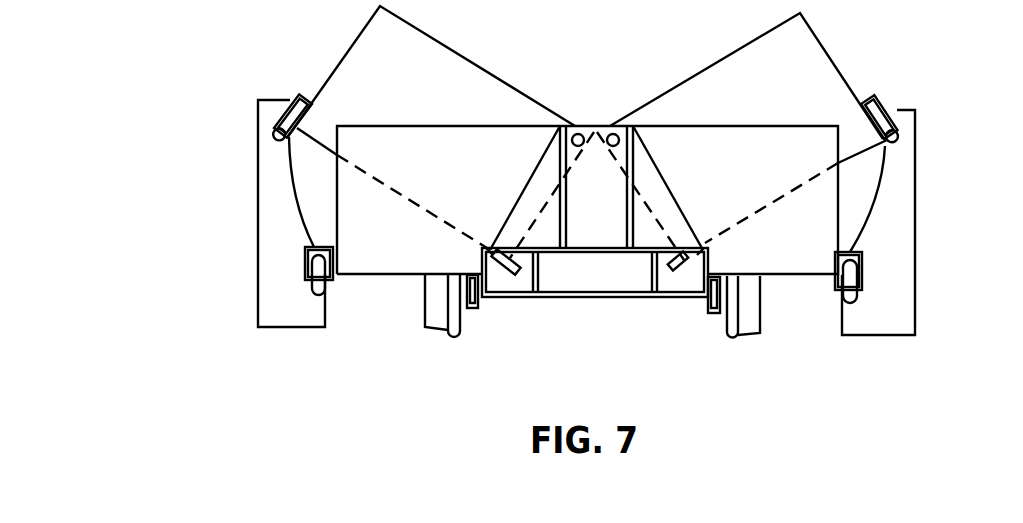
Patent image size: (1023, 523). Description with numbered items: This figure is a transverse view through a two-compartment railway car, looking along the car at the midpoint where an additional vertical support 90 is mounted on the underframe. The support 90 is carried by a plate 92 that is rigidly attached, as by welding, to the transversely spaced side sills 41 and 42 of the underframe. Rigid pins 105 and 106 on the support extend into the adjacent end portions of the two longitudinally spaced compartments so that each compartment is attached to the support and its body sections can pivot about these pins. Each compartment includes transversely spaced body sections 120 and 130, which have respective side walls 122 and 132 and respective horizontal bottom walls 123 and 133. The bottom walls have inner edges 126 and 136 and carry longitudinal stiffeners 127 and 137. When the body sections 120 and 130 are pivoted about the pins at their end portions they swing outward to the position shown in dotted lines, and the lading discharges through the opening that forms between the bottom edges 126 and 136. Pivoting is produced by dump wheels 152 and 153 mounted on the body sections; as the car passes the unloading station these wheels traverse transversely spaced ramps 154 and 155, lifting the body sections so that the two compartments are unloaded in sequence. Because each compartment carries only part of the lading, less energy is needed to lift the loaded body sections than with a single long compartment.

The side sill 41 is at (473, 308).
The side sill 42 is at (711, 313).
The vertical support 90 is at (579, 209).
The plate 92 is at (595, 272).
The rigid pin 105 is at (616, 134).
The rigid pin 106 is at (578, 134).
The body section 120 is at (421, 71).
The side wall 122 is at (365, 30).
The horizontal bottom wall 123 is at (430, 208).
The inner edge 126 is at (494, 247).
The longitudinal stiffener 127 is at (501, 258).
The body section 130 is at (797, 76).
The side wall 132 is at (812, 40).
The horizontal bottom wall 133 is at (751, 210).
The inner edge 136 is at (694, 243).
The longitudinal stiffener 137 is at (682, 262).
The dump wheel 152 is at (895, 136).
The dump wheel 153 is at (285, 141).
The ramp 154 is at (900, 225).
The ramp 155 is at (273, 255).